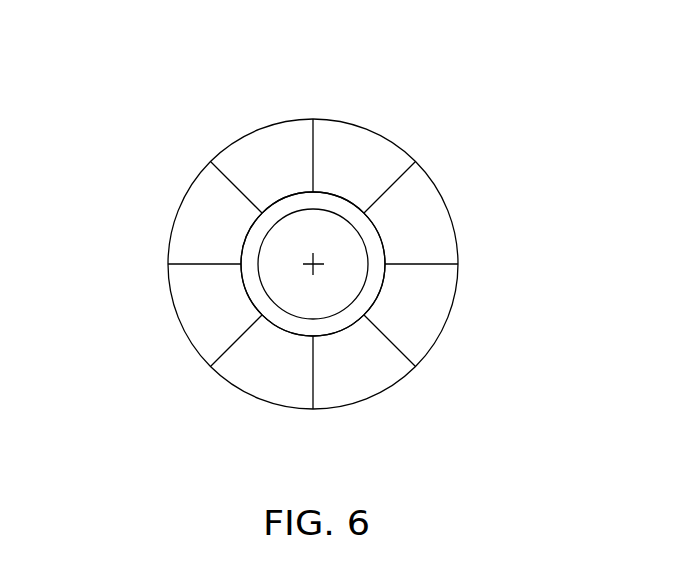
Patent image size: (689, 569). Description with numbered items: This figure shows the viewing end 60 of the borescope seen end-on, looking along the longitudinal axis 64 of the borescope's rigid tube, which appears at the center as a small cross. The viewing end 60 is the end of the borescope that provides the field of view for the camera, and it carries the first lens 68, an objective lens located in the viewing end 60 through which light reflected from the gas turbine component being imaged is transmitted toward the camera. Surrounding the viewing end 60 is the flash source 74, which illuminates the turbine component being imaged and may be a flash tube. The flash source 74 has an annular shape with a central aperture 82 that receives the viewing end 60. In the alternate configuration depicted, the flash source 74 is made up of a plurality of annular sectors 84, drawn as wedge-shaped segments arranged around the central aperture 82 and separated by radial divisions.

The viewing end 60 is at (236, 247).
The longitudinal axis 64 is at (328, 207).
The first lens 68 is at (275, 273).
The flash source 74 is at (468, 171).
The central aperture 82 is at (381, 240).
The annular sectors 84 is at (262, 158).